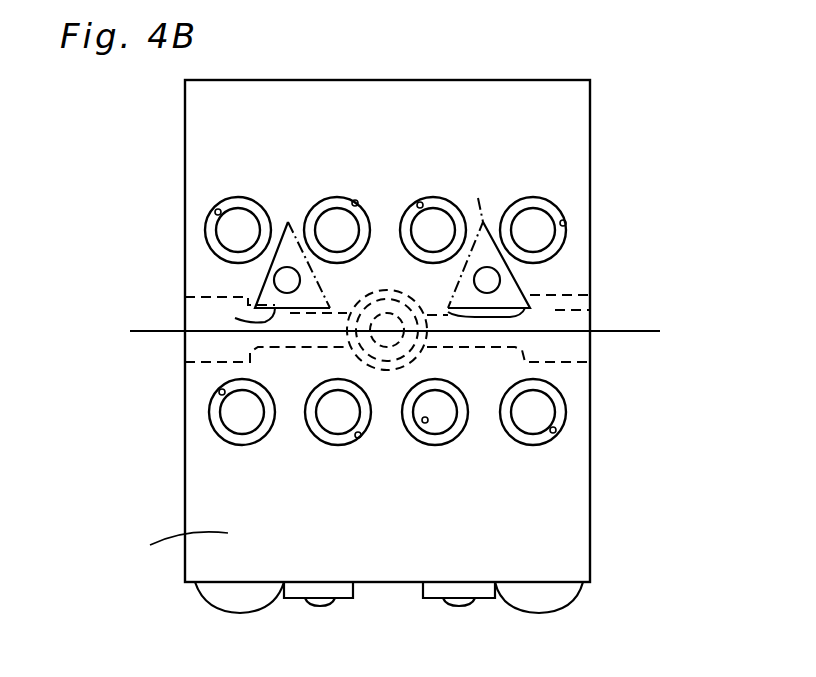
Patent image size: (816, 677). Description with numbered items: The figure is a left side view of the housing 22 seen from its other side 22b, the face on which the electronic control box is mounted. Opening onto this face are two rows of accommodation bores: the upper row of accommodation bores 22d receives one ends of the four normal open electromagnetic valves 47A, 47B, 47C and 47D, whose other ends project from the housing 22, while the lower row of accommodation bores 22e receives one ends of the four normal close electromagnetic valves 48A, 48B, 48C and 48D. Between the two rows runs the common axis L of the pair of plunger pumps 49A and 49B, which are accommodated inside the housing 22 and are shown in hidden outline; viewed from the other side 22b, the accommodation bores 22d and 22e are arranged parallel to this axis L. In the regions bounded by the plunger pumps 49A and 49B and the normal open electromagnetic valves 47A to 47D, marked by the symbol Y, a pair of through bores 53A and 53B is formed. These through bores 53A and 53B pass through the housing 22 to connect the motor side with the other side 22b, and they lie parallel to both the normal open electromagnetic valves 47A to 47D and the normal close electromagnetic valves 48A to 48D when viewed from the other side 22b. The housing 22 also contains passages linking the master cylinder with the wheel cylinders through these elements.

The housing 22 is at (598, 493).
The other side 22b is at (161, 547).
The accommodation bores 22d is at (215, 211).
The accommodation bores 22e is at (219, 392).
The normal open electromagnetic valve 47A is at (537, 222).
The normal open electromagnetic valve 47B is at (438, 224).
The normal open electromagnetic valve 47C is at (240, 222).
The normal open electromagnetic valve 47D is at (333, 222).
The normal close electromagnetic valve 48A is at (540, 403).
The normal close electromagnetic valve 48B is at (443, 418).
The normal close electromagnetic valve 48C is at (236, 420).
The normal close electromagnetic valve 48D is at (333, 420).
The plunger pump 49A is at (213, 323).
The plunger pump 49B is at (592, 308).
The through bore 53A is at (275, 283).
The through bore 53B is at (500, 282).
The region surrounded by the plunger pumps and normal open electromagnetic valves Y is at (235, 318).
The axes of the plunger pumps L is at (645, 333).